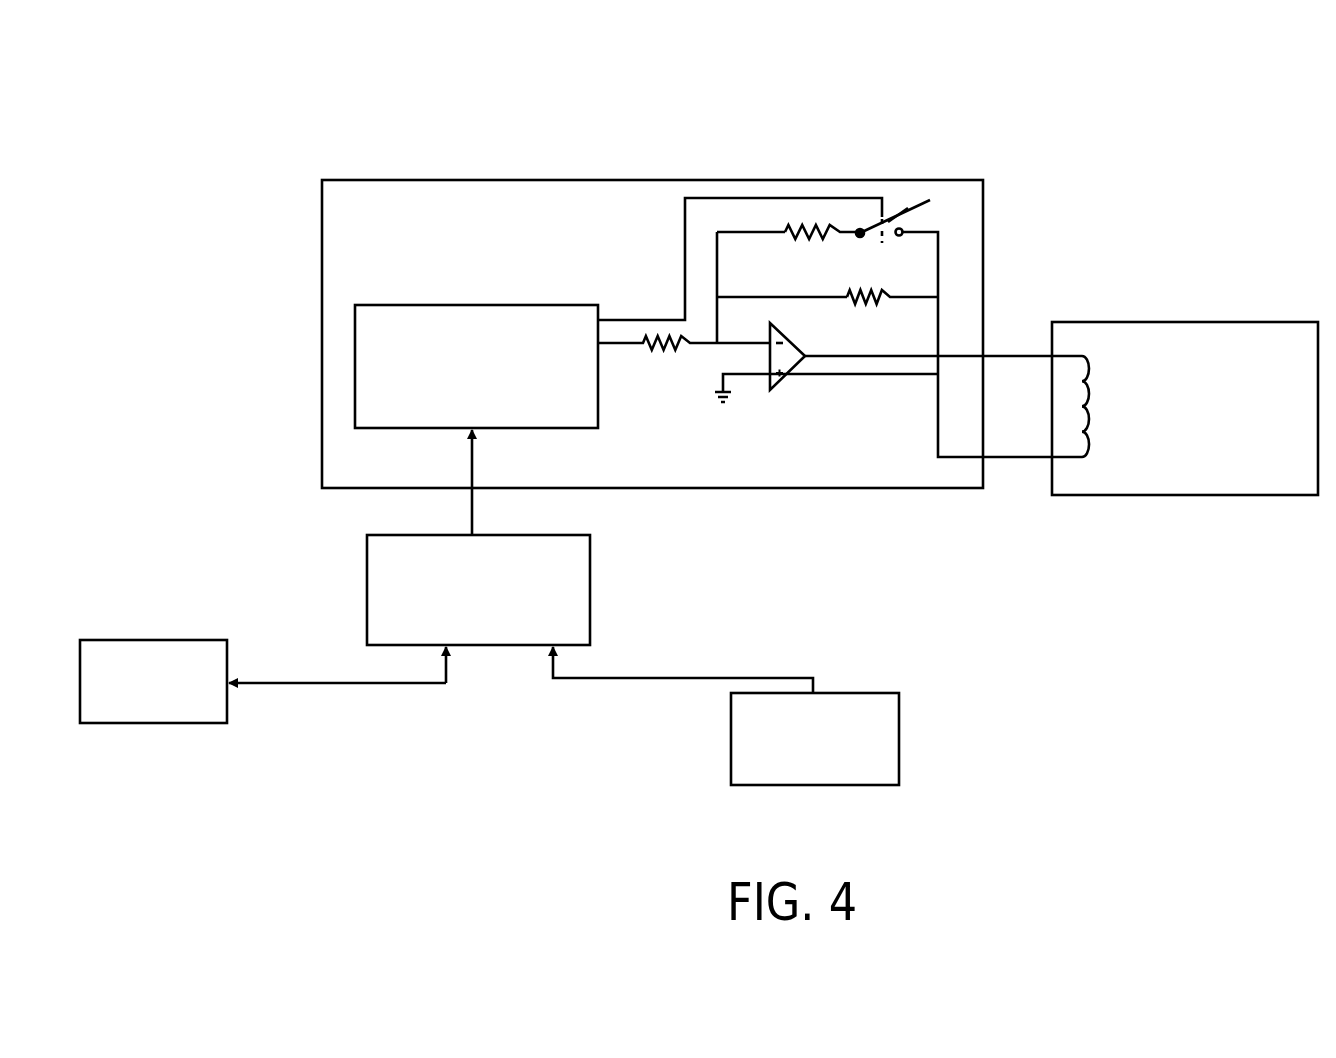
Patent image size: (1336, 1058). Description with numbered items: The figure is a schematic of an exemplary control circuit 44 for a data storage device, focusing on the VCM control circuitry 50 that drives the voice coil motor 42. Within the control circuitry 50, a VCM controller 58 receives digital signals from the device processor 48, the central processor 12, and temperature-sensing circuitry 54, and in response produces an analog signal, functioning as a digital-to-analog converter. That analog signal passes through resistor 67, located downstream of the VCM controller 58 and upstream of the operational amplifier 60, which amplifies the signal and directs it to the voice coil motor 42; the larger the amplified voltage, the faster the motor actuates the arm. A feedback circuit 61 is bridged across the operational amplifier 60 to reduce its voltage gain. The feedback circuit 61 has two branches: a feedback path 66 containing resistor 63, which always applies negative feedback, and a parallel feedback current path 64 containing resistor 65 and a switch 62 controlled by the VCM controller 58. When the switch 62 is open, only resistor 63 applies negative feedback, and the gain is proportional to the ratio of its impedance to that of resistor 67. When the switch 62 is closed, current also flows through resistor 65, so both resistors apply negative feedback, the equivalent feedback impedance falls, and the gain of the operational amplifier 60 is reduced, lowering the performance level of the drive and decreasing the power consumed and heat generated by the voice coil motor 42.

The central processor 12 is at (150, 725).
The voice coil motor 42 is at (1230, 318).
The servo control circuit 44 is at (946, 101).
The device processor 48 is at (590, 580).
The VCM control circuitry 50 is at (463, 180).
The temperature-sensing circuitry 54 is at (730, 735).
The VCM controller 58 is at (417, 305).
The operational amplifier 60 is at (788, 365).
The feedback circuit 61 is at (863, 195).
The switch 62 is at (930, 200).
The resistor 63 is at (892, 290).
The parallel feedback current path 64 is at (765, 229).
The resistor 65 is at (817, 230).
The feedback path 66 is at (775, 294).
The resistor 67 is at (652, 343).